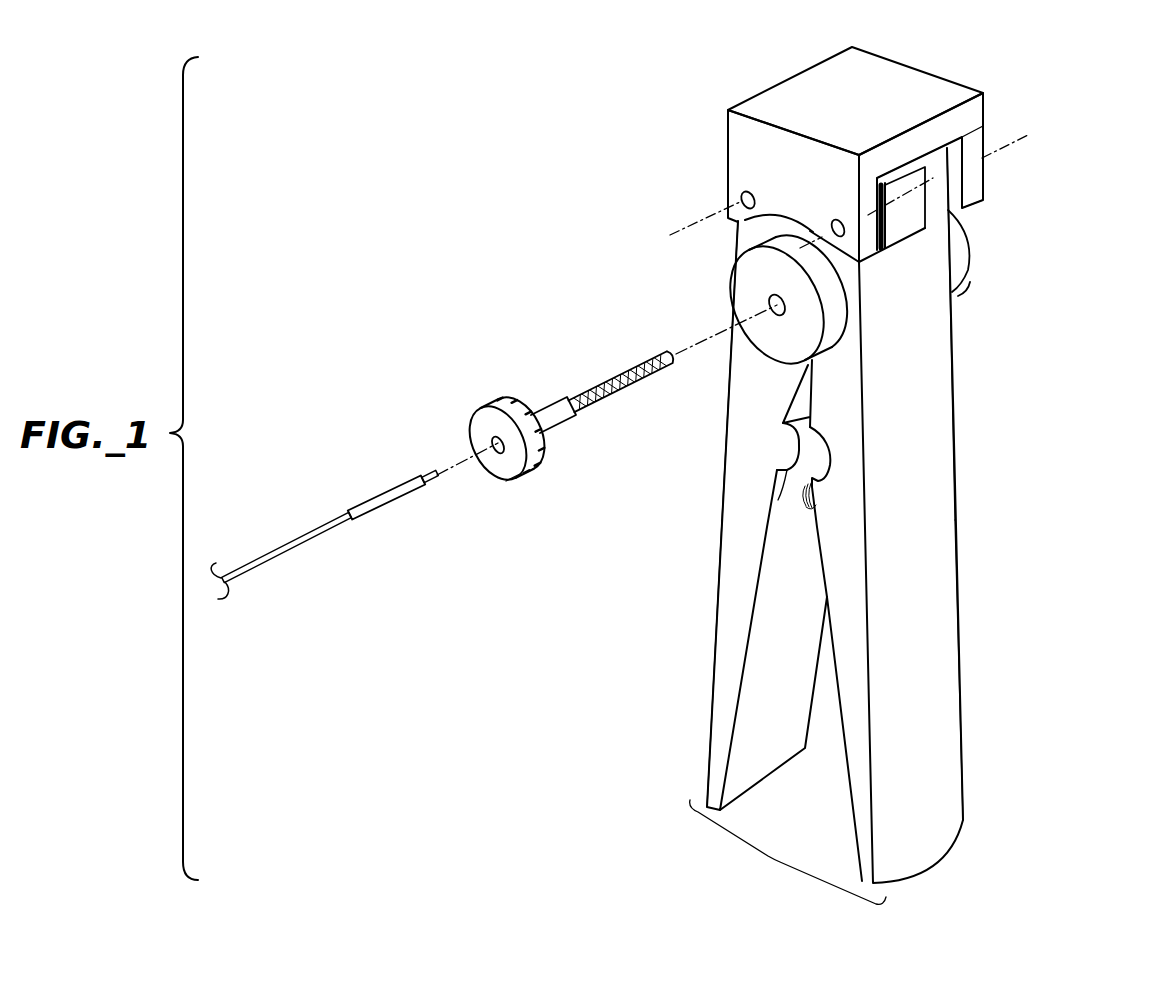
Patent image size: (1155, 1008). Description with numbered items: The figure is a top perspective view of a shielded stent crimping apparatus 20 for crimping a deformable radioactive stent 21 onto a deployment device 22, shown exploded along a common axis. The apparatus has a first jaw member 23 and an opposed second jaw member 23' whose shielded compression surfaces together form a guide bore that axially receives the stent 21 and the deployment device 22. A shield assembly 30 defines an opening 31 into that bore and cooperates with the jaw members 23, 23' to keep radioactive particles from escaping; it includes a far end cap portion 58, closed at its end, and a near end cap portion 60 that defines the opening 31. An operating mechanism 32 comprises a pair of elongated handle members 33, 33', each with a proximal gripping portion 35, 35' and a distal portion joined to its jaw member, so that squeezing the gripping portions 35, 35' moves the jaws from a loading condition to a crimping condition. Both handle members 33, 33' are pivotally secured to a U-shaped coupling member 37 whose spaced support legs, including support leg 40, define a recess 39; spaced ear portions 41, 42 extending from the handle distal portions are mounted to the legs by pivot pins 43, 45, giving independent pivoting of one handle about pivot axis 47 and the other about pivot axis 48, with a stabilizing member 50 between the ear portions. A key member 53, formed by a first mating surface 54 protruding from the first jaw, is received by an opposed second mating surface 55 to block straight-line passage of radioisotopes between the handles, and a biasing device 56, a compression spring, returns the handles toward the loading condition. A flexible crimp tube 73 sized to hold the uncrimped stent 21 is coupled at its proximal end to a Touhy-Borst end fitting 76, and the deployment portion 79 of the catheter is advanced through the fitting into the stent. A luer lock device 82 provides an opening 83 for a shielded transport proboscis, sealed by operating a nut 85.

The stent crimping apparatus 20 is at (1036, 92).
The deformable radioactive stent 21 is at (641, 367).
The deployment device 22 is at (320, 520).
The first jaw member 23 is at (922, 515).
The second jaw member 23' is at (756, 515).
The shield assembly 30 is at (865, 332).
The opening 31 is at (772, 300).
The operating mechanism 32 is at (778, 860).
The handle member 33 is at (985, 376).
The handle member 33' is at (697, 399).
The proximal gripping portion 35 is at (981, 670).
The proximal gripping portion 35' is at (687, 663).
The coupling member 37 is at (797, 70).
The recess 39 is at (962, 142).
The support leg 40 is at (973, 186).
The ear portion 41 is at (881, 175).
The ear portion 42 is at (930, 165).
The pivot pin 43 is at (834, 220).
The pivot pin 45 is at (741, 194).
The pivot axis 47 is at (1020, 148).
The pivot axis 48 is at (697, 218).
The stabilizing member 50 is at (897, 187).
The key member 53 is at (783, 480).
The first mating surface 54 is at (797, 443).
The second mating surface 55 is at (830, 448).
The biasing device 56 is at (816, 506).
The end cap portion 58 is at (957, 238).
The end cap portion 60 is at (733, 307).
The crimp tube 73 is at (597, 385).
The end fitting 76 is at (515, 405).
The deployment portion 79 is at (386, 494).
The luer lock device 82 is at (533, 455).
The opening 83 is at (498, 450).
The nut 85 is at (508, 483).